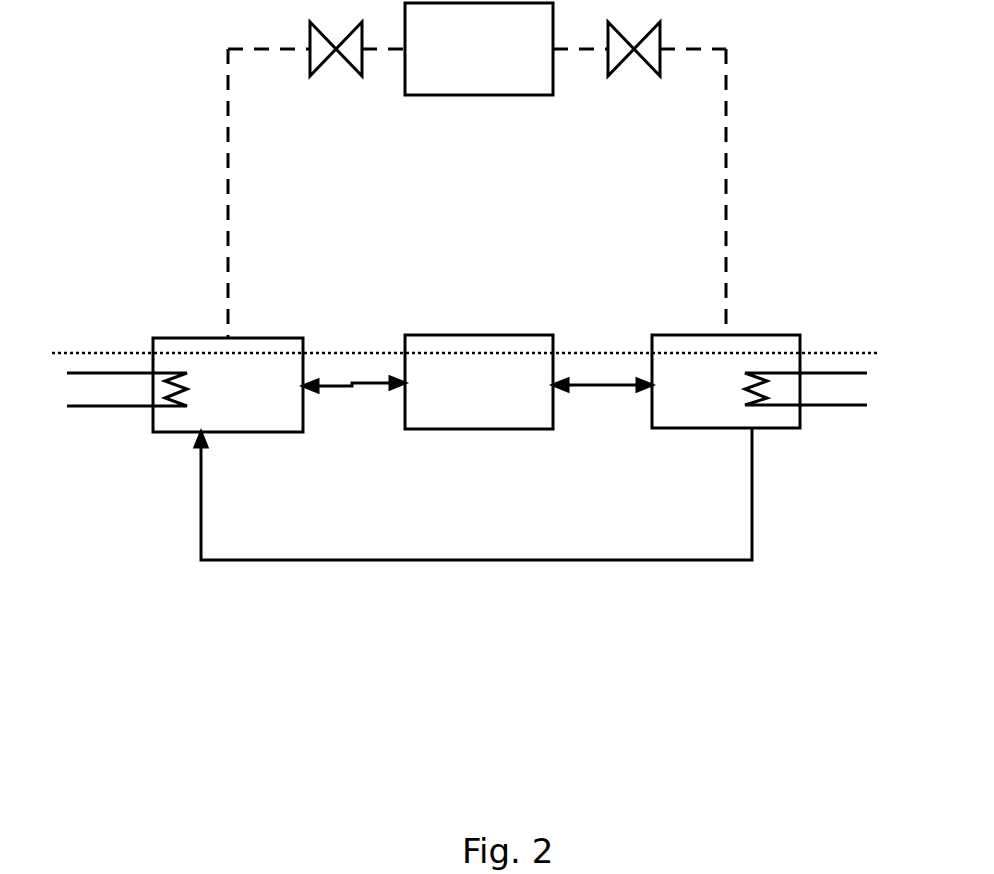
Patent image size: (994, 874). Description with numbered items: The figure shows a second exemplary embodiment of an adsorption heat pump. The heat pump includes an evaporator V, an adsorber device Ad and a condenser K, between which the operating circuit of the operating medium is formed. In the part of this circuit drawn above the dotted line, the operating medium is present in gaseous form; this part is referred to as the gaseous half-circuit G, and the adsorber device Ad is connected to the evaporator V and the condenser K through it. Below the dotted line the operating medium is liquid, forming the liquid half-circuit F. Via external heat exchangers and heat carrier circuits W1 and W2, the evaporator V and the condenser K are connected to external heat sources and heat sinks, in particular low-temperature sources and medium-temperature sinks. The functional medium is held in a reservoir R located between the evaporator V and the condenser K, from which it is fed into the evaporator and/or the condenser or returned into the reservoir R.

The adsorber device Ad is at (477, 170).
The evaporator V is at (228, 385).
The reservoir R is at (477, 382).
The condenser K is at (726, 381).
The heat exchanger and heat carrier circuit W1 is at (110, 391).
The heat exchanger and heat carrier circuit W2 is at (833, 391).
The gaseous half-circuit G is at (464, 331).
The liquid half-circuit F is at (525, 494).